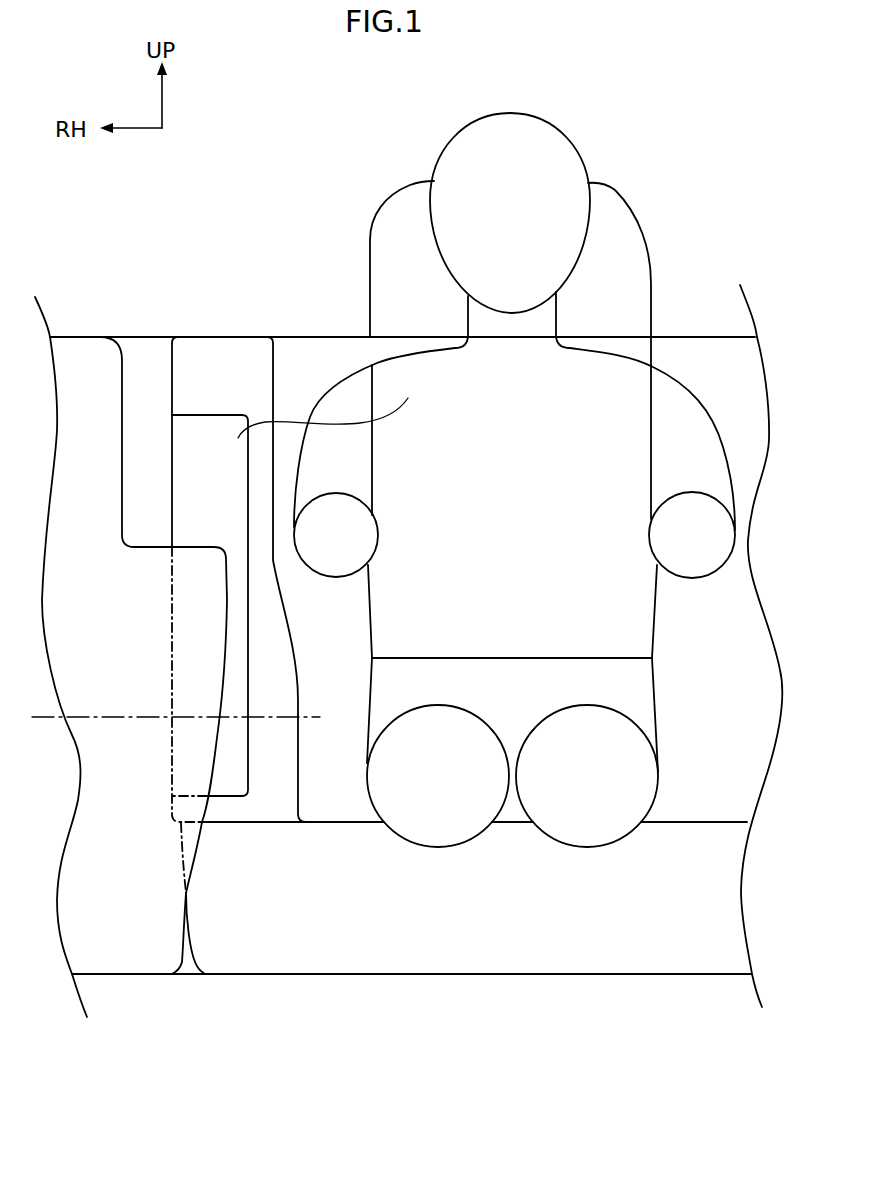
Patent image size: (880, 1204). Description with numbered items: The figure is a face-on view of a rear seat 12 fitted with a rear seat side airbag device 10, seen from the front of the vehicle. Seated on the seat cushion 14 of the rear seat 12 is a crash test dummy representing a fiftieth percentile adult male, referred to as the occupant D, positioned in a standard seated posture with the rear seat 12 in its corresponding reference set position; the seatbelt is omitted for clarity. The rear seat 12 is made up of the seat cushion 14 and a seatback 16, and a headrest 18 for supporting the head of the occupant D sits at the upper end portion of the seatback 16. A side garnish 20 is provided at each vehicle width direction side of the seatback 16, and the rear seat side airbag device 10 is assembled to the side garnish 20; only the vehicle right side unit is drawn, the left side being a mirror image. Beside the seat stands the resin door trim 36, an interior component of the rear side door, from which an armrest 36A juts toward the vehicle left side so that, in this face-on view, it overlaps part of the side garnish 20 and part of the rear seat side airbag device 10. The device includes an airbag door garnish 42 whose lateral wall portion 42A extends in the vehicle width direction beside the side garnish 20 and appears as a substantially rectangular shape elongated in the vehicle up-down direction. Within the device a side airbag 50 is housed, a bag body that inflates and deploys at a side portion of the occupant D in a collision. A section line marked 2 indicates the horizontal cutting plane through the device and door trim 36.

The rear seat side airbag device 10 is at (222, 409).
The rear seat 12 is at (331, 306).
The seat cushion 14 is at (338, 956).
The seatback 16 is at (686, 348).
The headrest 18 is at (627, 222).
The side garnish 20 is at (257, 351).
The resin door trim 36 is at (144, 582).
The side airbag 50 is at (144, 582).
The armrest 36A is at (153, 545).
The lateral wall portion 42A is at (366, 405).
The airbag door garnish 42 is at (366, 405).
The section line 2- 2 is at (33, 708).
The occupant D is at (572, 130).